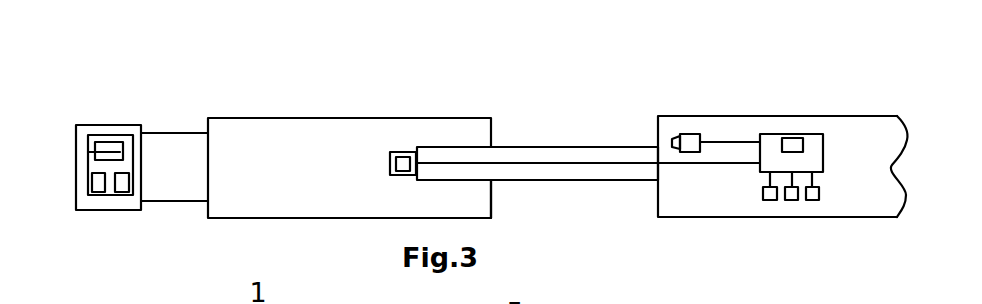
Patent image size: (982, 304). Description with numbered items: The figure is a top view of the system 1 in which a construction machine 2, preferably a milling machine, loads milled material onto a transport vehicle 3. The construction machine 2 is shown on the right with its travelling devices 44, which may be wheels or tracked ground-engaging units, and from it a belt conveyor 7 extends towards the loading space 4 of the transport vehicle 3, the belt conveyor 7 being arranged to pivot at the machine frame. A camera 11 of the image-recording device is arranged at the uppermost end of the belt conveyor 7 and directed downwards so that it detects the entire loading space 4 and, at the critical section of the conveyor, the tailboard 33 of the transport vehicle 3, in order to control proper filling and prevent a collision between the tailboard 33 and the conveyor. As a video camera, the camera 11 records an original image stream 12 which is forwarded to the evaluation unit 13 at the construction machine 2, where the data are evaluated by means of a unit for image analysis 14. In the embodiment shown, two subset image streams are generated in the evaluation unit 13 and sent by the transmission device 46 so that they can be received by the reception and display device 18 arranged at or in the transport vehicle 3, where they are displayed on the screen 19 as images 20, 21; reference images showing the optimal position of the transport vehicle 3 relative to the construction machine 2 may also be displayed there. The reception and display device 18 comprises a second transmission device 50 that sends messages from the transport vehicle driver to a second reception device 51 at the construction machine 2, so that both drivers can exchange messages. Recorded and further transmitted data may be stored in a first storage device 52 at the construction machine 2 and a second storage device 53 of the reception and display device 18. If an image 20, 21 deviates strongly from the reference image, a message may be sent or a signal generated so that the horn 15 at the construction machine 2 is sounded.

The system 1 is at (327, 47).
The construction machine 2 is at (718, 122).
The transport vehicle 3 is at (198, 95).
The loading space 4 is at (307, 132).
The belt conveyor 7 is at (553, 159).
The camera 11 is at (404, 162).
The original image stream 12 is at (577, 165).
The evaluation unit 13 is at (793, 136).
The unit for image analysis 14 is at (797, 145).
The horn 15 is at (690, 137).
The reception and display device 18 is at (90, 145).
The screen 19 is at (115, 148).
The image 20 is at (100, 154).
The image 21 is at (95, 158).
The tailboard 33 is at (493, 182).
The travelling devices 44 is at (731, 10).
The transmission device 46 is at (763, 198).
The second transmission device 50 is at (93, 193).
The second reception device 51 is at (788, 200).
The first storage device 52 is at (811, 200).
The second storage device 53 is at (118, 193).